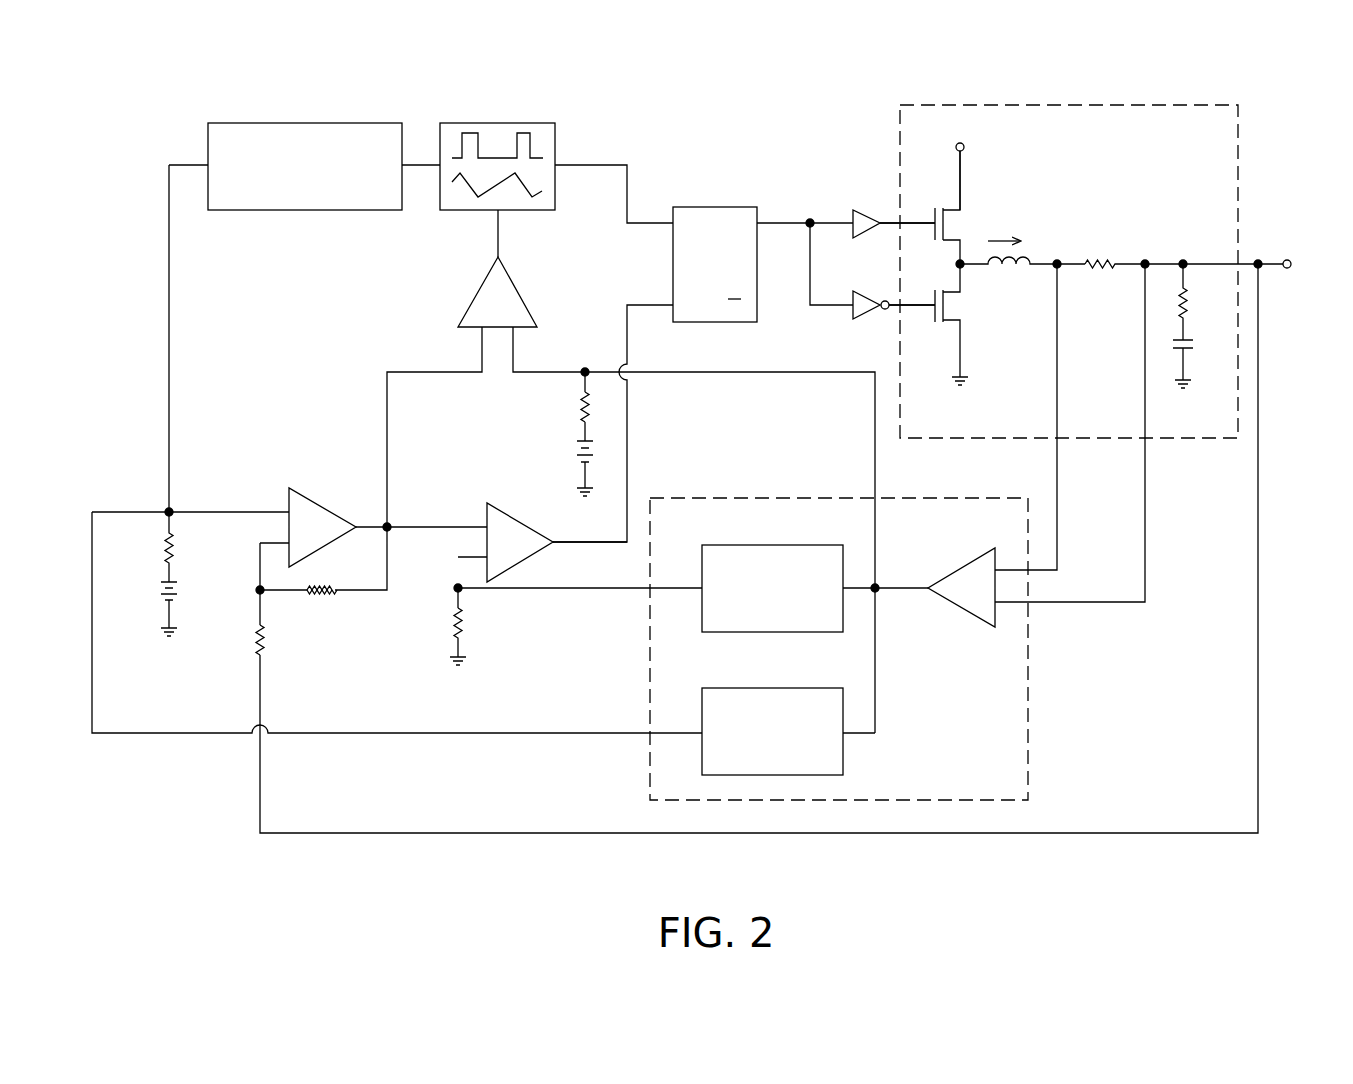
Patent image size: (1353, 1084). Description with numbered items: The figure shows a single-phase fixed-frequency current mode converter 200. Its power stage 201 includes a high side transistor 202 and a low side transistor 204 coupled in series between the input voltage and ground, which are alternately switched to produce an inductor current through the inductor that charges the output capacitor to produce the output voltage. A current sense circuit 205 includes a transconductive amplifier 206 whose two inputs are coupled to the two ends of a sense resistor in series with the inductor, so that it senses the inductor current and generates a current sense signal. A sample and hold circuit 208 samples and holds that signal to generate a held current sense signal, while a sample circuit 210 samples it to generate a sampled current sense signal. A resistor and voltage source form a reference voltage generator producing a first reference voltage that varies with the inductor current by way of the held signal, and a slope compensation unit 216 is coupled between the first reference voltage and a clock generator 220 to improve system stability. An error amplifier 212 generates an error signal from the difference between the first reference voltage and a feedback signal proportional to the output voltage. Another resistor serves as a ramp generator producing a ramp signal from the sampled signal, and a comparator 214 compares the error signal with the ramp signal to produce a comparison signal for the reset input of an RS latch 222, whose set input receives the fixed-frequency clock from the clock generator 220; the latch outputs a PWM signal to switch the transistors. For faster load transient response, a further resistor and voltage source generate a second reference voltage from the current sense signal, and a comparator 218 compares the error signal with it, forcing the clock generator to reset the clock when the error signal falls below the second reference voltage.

The single-phase fixed-frequency current mode converter 200 is at (1284, 108).
The power stage 201 is at (900, 150).
The high side transistor 202 is at (974, 212).
The low side transistor 204 is at (974, 316).
The current sense circuit 205 is at (1028, 719).
The transconductive amplifier 206 is at (960, 568).
The sample and hold circuit 208 is at (740, 688).
The sample circuit 210 is at (763, 545).
The error amplifier 212 is at (325, 503).
The comparator 214 is at (520, 517).
The slope compensation unit 216 is at (307, 213).
The comparator 218 is at (517, 287).
The clock generator 220 is at (465, 211).
The RS latch 222 is at (712, 207).